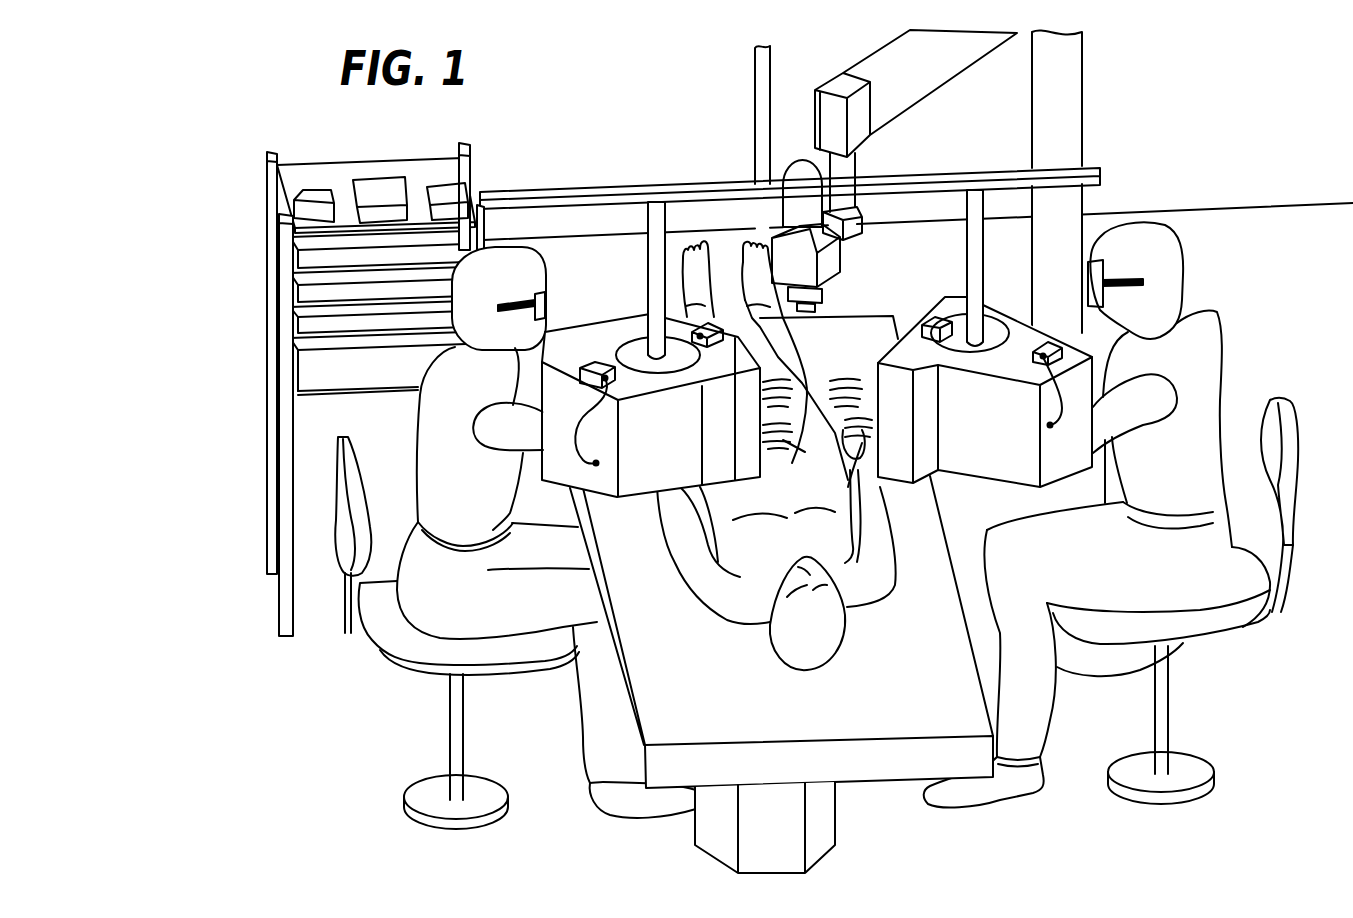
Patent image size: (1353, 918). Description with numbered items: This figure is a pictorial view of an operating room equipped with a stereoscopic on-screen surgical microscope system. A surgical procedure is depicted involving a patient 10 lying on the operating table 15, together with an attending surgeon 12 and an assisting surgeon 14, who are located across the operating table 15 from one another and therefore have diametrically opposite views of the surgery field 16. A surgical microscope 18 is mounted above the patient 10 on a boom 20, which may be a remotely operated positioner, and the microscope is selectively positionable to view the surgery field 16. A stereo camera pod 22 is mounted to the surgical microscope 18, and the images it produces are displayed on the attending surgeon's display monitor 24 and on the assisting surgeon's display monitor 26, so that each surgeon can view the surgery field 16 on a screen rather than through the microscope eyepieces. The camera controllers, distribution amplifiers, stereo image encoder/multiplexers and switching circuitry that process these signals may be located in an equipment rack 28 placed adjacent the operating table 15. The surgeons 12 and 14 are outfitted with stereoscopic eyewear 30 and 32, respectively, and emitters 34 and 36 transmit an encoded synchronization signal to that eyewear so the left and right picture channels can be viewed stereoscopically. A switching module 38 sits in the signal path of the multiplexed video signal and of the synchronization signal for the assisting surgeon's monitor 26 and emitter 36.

The patient 10 is at (862, 595).
The attending surgeon 12 is at (1190, 333).
The assisting surgeon 14 is at (440, 412).
The operating table 15 is at (707, 722).
The surgery field 16 is at (803, 372).
The surgical microscope 18 is at (828, 265).
The boom 20 is at (918, 91).
The stereo camera pod 22 is at (800, 178).
The attending surgeon's display monitor 24 is at (668, 452).
The assisting surgeon's display monitor 26 is at (991, 440).
The equipment rack 28 is at (266, 308).
The stereoscopic eyewear 30 is at (1090, 290).
The stereoscopic eyewear 32 is at (548, 312).
The emitter 34 is at (712, 321).
The emitter 36 is at (943, 316).
The switching module 38 is at (600, 360).